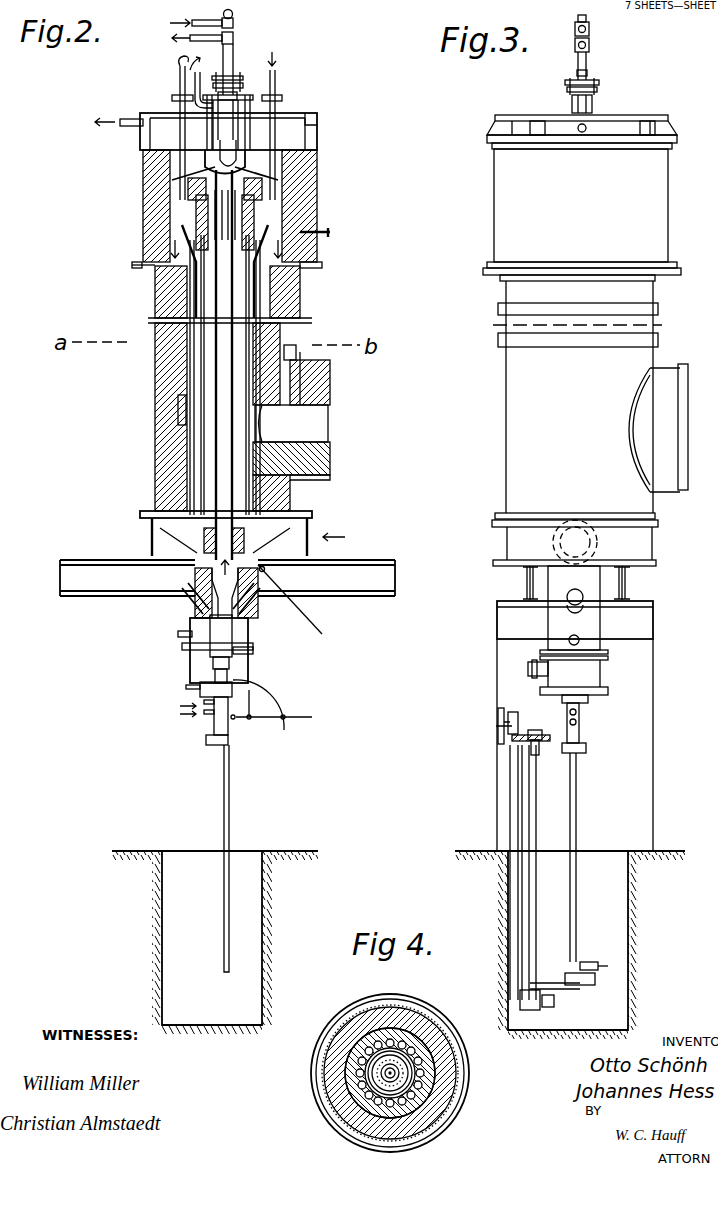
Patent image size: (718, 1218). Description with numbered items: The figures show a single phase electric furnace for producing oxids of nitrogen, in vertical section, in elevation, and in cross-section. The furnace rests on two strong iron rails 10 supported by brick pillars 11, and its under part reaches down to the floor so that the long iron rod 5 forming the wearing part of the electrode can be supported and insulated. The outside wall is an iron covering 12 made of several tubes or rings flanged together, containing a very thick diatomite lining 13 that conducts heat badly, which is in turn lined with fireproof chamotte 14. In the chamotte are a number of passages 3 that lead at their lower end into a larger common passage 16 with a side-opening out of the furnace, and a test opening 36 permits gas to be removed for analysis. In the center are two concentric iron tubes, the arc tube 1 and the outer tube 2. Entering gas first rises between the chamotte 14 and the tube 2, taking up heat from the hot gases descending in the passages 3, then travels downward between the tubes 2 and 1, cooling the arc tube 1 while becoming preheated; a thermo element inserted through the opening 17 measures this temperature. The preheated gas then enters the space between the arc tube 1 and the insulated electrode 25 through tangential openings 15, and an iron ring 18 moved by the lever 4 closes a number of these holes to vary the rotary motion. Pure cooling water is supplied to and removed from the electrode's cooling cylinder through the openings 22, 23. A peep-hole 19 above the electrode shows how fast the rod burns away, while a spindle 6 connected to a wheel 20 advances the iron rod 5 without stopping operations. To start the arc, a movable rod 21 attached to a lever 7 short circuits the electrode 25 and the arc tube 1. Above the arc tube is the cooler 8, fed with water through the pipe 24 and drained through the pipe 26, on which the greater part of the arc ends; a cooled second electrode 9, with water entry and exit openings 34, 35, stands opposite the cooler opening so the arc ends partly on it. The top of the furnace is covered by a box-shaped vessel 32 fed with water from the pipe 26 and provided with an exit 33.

In FIG. 2, the arc tube 1 is at (225, 377).
In FIG. 4, the arc tube 1 is at (402, 1075).
In FIG. 2, the outer tube 2 is at (202, 374).
In FIG. 4, the outer tube 2 is at (436, 1095).
In FIG. 2, the passages 3 is at (262, 326).
In FIG. 4, the passages 3 is at (389, 1030).
In FIG. 2, the lever 4 is at (271, 705).
In FIG. 2, the iron rod 5 is at (229, 858).
In FIG. 3, the iron rod 5 is at (577, 800).
In FIG. 3, the spindle 6 is at (531, 815).
In FIG. 2, the lever 7 is at (291, 600).
In FIG. 2, the cooler 8 is at (225, 215).
In FIG. 2, the second electrode 9 is at (155, 188).
In FIG. 2, the iron rails 10 is at (227, 578).
In FIG. 3, the iron rails 10 is at (578, 583).
In FIG. 3, the brick pillars 11 is at (575, 726).
In FIG. 2, the iron covering 12 is at (158, 306).
In FIG. 3, the iron covering 12 is at (585, 338).
In FIG. 4, the iron covering 12 is at (346, 1120).
In FIG. 2, the diatomite lining 13 is at (156, 220).
In FIG. 4, the diatomite lining 13 is at (336, 1078).
In FIG. 2, the chamotte lining 14 is at (249, 214).
In FIG. 4, the chamotte lining 14 is at (358, 1042).
In FIG. 2, the tangential openings 15 is at (210, 644).
In FIG. 2, the common passage 16 is at (182, 425).
In FIG. 2, the opening 17 is at (184, 636).
In FIG. 3, the opening 17 is at (582, 630).
In FIG. 2, the iron ring 18 is at (244, 647).
In FIG. 2, the peep-hole 19 is at (181, 602).
In FIG. 3, the peep-hole 19 is at (582, 586).
In FIG. 3, the wheel 20 is at (500, 722).
In FIG. 2, the movable rod 21 is at (259, 604).
In FIG. 2, the water supply opening 22 is at (206, 716).
In FIG. 3, the water supply opening 22 is at (580, 724).
In FIG. 2, the water exit opening 23 is at (203, 702).
In FIG. 3, the water exit opening 23 is at (580, 712).
In FIG. 2, the water supply pipe 24 is at (283, 126).
In FIG. 2, the insulated electrode 25 is at (226, 589).
In FIG. 2, the water exit pipe 26 is at (180, 83).
In FIG. 2, the box-shaped vessel 32 is at (228, 131).
In FIG. 2, the exit 33 is at (119, 136).
In FIG. 2, the water entry opening 34 is at (192, 27).
In FIG. 3, the water entry opening 34 is at (589, 29).
In FIG. 2, the water exit opening 35 is at (221, 41).
In FIG. 3, the water exit opening 35 is at (589, 45).
In FIG. 2, the test opening 36 is at (308, 352).